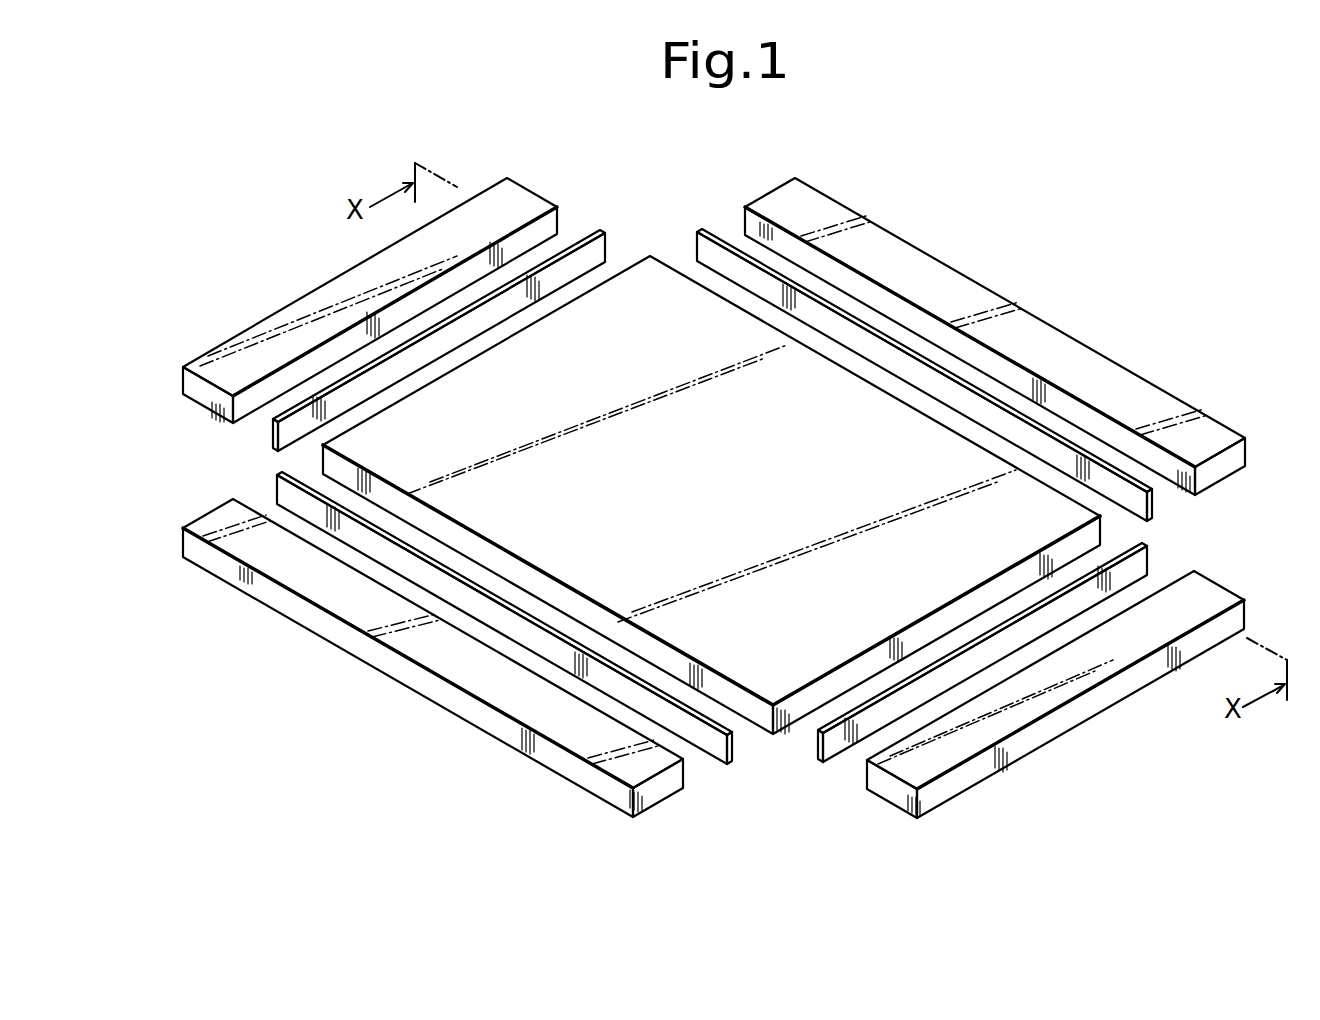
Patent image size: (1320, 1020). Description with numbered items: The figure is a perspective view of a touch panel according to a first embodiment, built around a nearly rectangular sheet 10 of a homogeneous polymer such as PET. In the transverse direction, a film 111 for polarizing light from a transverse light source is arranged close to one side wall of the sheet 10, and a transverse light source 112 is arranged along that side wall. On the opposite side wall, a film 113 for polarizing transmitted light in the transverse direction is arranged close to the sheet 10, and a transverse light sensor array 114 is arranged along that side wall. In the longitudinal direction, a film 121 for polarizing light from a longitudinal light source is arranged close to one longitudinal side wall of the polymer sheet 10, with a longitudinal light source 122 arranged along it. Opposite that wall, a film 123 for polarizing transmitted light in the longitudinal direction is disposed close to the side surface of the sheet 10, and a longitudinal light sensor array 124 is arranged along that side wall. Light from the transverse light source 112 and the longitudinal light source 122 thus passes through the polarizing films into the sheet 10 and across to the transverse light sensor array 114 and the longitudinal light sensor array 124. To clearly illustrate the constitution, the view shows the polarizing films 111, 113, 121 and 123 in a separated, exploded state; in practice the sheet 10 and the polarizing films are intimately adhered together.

The sheet 10 is at (658, 277).
The film for polarizing light from a transverse light source 111 is at (715, 250).
The transverse light source 112 is at (840, 212).
The film for polarizing transmitted light in the transverse direction 113 is at (717, 750).
The transverse light sensor array 114 is at (575, 775).
The film for polarizing light from a longitudinal light source 121 is at (592, 248).
The longitudinal light source 122 is at (518, 188).
The film for polarizing transmitted light in the longitudinal direction 123 is at (833, 750).
The longitudinal light sensor array 124 is at (905, 807).